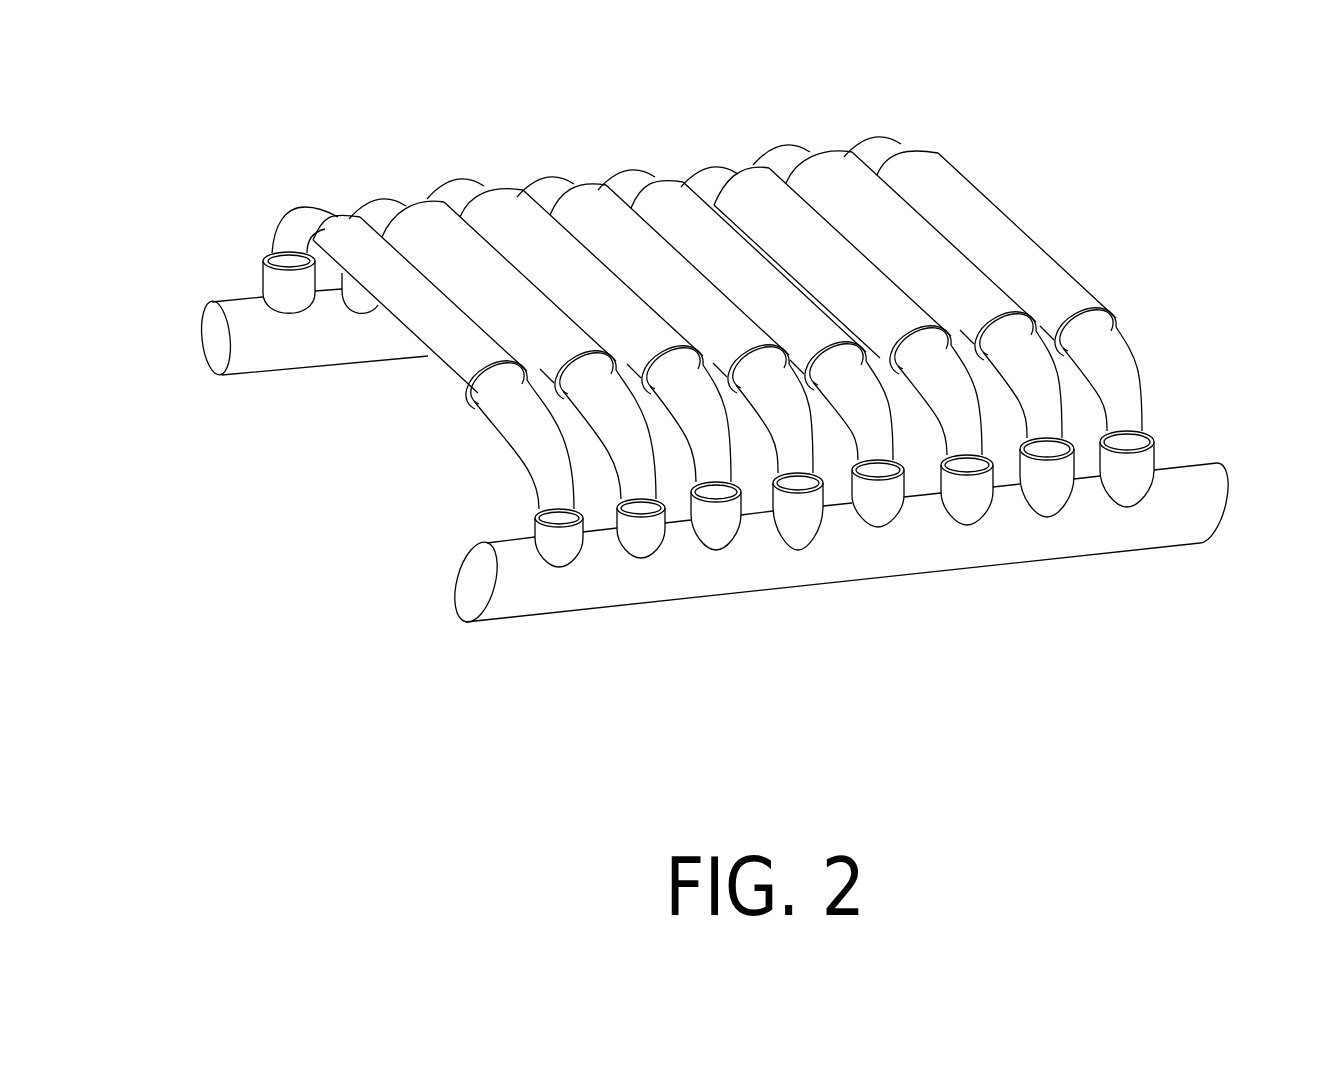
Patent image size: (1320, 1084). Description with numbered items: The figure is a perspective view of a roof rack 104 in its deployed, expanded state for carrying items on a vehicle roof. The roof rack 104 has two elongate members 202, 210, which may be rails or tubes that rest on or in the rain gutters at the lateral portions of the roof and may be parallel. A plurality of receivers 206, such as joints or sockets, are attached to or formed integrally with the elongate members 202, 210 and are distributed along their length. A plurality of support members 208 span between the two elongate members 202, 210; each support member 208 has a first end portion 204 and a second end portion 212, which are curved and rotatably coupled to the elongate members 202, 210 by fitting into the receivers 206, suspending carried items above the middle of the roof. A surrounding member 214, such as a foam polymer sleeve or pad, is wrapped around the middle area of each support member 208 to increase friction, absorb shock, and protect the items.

The roof rack 104 is at (1016, 122).
The elongate member 202 is at (1200, 493).
The first end portion 204 is at (1141, 413).
The receiver 206 is at (1153, 440).
The support member 208 is at (1108, 337).
The elongate member 210 is at (241, 357).
The second end portion 212 is at (884, 150).
The surrounding member 214 is at (1053, 261).